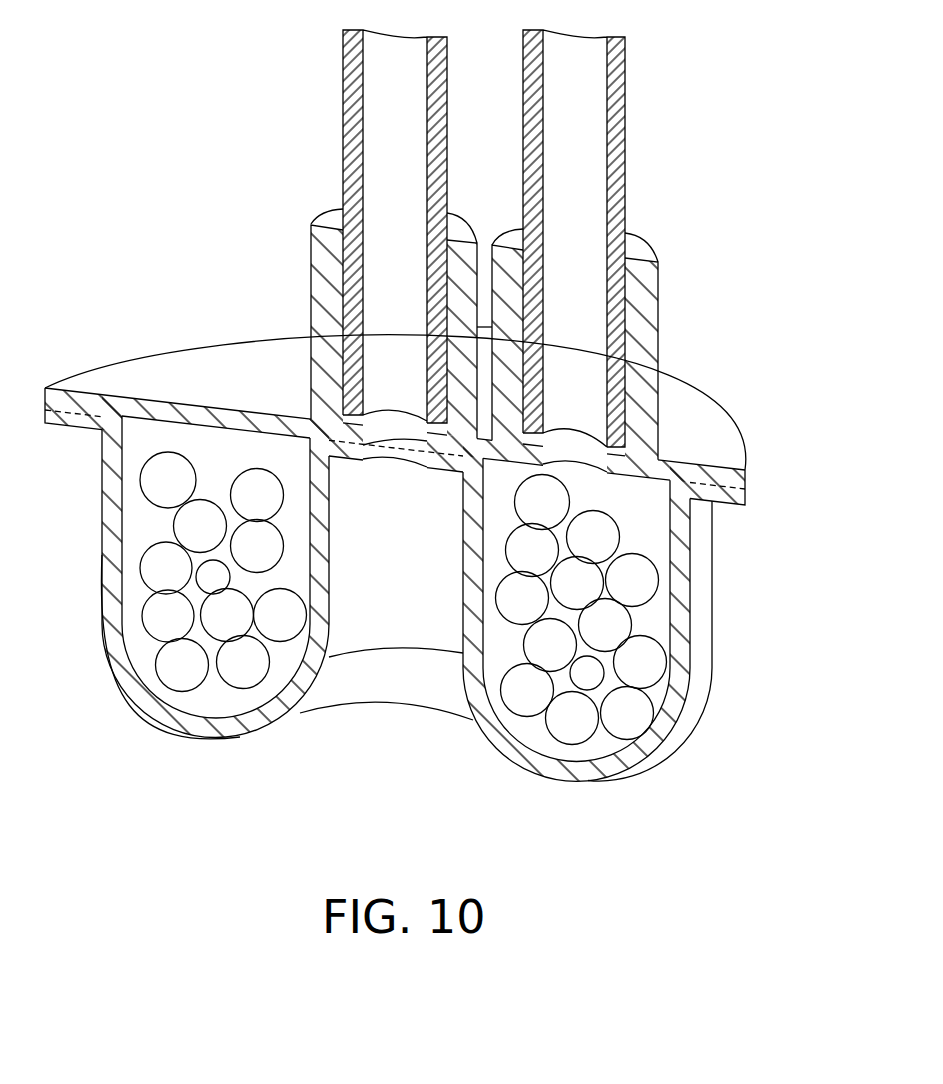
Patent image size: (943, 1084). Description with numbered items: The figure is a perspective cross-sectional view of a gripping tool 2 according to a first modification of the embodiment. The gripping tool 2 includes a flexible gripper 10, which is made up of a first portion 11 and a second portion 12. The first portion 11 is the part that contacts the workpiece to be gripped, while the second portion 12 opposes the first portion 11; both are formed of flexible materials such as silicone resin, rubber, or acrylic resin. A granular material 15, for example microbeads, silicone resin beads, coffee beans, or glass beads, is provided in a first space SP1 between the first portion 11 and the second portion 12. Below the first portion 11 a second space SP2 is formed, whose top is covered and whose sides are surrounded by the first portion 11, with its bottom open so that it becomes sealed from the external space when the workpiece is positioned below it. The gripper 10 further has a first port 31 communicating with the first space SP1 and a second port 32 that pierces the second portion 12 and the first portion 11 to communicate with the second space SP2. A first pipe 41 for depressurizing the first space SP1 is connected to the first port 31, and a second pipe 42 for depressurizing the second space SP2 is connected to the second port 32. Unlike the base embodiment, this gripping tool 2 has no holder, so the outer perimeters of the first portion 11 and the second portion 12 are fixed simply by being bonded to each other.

The gripping tool 2 is at (437, 447).
The gripper 10 is at (394, 605).
The first portion 11 is at (262, 725).
The second portion 12 is at (322, 400).
The granular material 15 is at (160, 568).
The first port 31 is at (660, 300).
The second port 32 is at (310, 270).
The first pipe 41 is at (628, 107).
The second pipe 42 is at (348, 80).
The first space SP1 is at (611, 753).
The second space SP2 is at (406, 591).